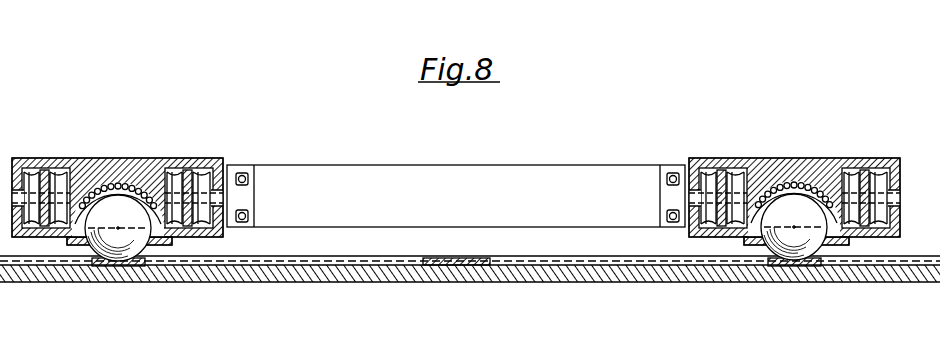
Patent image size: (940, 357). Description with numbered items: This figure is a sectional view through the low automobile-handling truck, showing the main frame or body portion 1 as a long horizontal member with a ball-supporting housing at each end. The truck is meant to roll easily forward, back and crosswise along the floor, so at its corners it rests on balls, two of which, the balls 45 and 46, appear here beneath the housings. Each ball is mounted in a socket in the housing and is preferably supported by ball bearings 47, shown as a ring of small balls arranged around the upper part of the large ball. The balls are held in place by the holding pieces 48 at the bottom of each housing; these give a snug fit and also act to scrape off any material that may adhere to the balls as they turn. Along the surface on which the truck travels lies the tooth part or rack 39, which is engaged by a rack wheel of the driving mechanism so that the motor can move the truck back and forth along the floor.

The main frame 1 is at (456, 208).
The tooth part or rack 39 is at (472, 264).
The ball 45 is at (123, 264).
The ball 46 is at (791, 259).
The ball bearings 47 is at (803, 176).
The holding pieces 48 is at (160, 246).